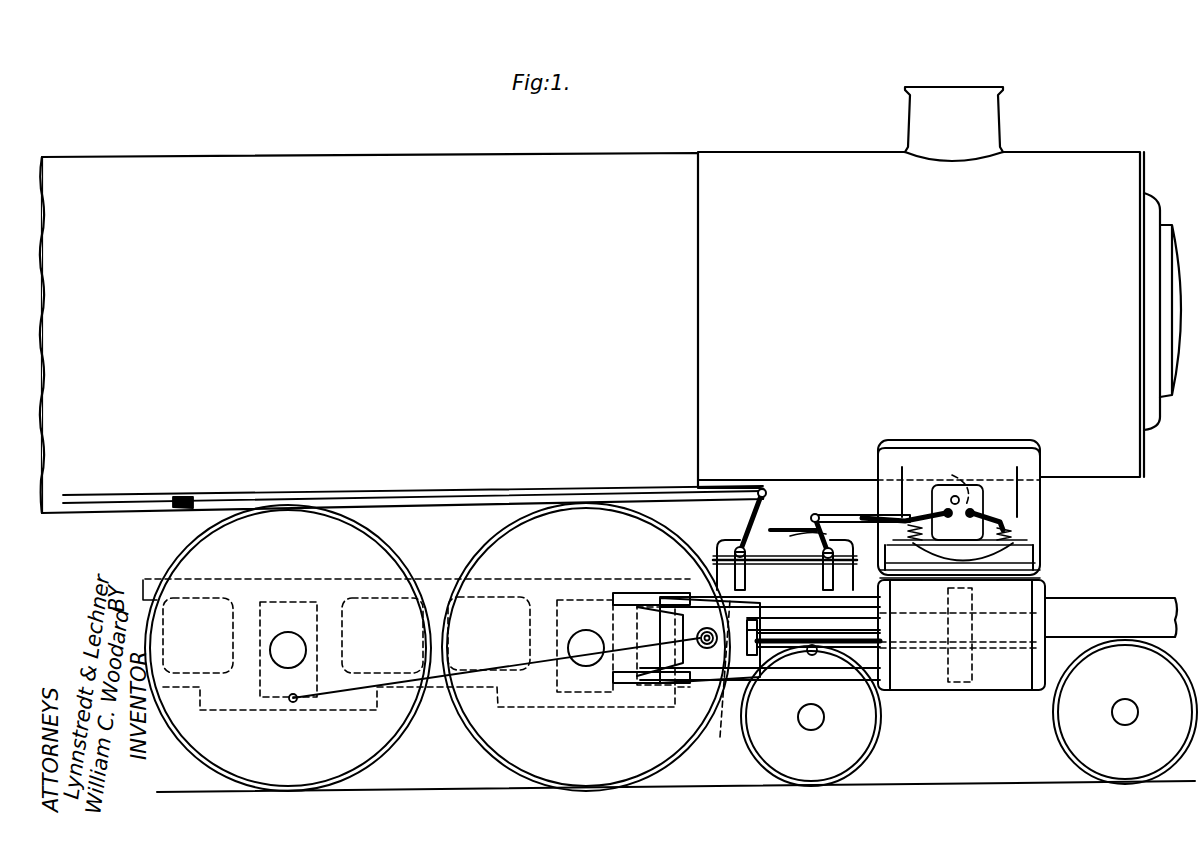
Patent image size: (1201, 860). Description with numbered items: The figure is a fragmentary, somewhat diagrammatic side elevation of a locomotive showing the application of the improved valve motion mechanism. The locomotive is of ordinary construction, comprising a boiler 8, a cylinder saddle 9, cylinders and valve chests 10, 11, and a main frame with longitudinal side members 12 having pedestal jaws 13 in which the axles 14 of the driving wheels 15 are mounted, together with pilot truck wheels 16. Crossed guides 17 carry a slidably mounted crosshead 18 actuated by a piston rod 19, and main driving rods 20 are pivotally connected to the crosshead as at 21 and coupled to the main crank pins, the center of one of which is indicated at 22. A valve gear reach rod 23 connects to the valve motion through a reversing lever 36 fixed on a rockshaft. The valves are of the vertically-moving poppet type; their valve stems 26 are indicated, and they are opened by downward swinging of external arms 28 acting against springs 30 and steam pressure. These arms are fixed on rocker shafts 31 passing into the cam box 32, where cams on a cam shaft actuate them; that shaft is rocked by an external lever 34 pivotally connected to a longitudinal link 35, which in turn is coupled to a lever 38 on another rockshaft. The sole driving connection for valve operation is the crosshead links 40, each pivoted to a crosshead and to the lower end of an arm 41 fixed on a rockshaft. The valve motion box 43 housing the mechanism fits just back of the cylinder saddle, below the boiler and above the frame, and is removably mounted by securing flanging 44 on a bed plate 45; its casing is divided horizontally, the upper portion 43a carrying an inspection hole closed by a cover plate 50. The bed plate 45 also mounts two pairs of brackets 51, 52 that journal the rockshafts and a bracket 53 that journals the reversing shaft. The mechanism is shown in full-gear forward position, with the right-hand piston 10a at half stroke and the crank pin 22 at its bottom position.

The boiler 8 is at (610, 362).
The cylinder saddle 9 is at (1033, 508).
The cylinders and valve chests 10 is at (1017, 680).
The right-hand piston 10a is at (957, 688).
The cylinders and valve chests 11 is at (1030, 553).
The longitudinal side members 12 is at (435, 578).
The pedestal jaws 13 is at (258, 652).
The axles 14 is at (286, 642).
The driving wheels 15 is at (400, 760).
The pilot truck wheels 16 is at (880, 730).
The crossed guides 17 is at (625, 593).
The crosshead 18 is at (700, 672).
The piston rod 19 is at (862, 635).
The main driving rods 20 is at (515, 663).
The pivotal connection 21 is at (696, 637).
The main crank pin center 22 is at (293, 702).
The valve gear reach rod 23 is at (199, 497).
The valve stems 26 is at (910, 520).
The external arms 28 is at (957, 515).
The springs 30 is at (963, 553).
The rocker shafts 31 is at (948, 508).
The cam box 32 is at (980, 492).
The external lever 34 is at (967, 475).
The longitudinal link 35 is at (855, 514).
The lever 36 is at (755, 509).
The lever 38 is at (830, 534).
The crosshead links 40 is at (718, 680).
The arm 41 is at (810, 618).
The valve motion box 43 is at (792, 608).
The upper portion 43a is at (796, 536).
The securing flanging 44 is at (857, 598).
The bed plate 45 is at (790, 650).
The cover plate 50 is at (788, 527).
The brackets 51 is at (792, 600).
The brackets 52 is at (760, 641).
The bracket 53 is at (722, 565).